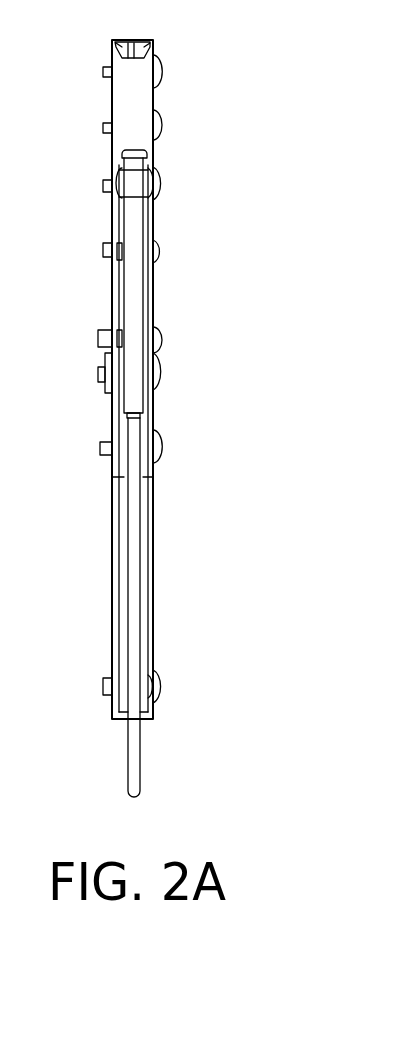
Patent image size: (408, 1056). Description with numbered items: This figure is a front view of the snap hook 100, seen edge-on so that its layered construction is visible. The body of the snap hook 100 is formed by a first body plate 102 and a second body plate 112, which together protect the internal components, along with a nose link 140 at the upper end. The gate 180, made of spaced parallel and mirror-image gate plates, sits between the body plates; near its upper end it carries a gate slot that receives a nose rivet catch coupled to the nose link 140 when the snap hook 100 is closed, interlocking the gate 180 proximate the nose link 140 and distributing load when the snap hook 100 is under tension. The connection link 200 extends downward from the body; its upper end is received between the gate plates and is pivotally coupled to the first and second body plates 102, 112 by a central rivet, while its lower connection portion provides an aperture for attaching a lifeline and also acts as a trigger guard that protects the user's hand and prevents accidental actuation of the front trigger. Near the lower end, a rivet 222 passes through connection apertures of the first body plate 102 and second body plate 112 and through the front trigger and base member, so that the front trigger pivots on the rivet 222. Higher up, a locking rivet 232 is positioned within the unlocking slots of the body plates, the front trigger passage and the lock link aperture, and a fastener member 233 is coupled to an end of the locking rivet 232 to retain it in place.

The snap hook 100 is at (270, 92).
The first body plate 102 is at (156, 547).
The second body plate 112 is at (112, 507).
The nose link 140 is at (135, 108).
The gate 180 is at (135, 293).
The connection link 200 is at (140, 734).
The rivet 222 is at (162, 687).
The locking rivet 232 is at (162, 378).
The fastener member 233 is at (102, 383).